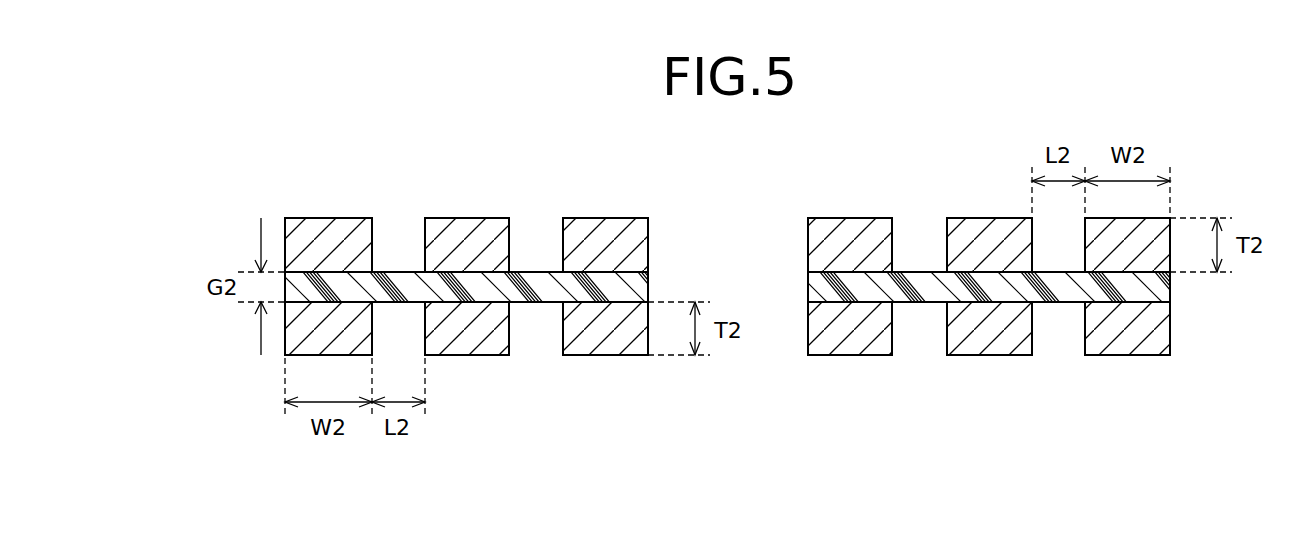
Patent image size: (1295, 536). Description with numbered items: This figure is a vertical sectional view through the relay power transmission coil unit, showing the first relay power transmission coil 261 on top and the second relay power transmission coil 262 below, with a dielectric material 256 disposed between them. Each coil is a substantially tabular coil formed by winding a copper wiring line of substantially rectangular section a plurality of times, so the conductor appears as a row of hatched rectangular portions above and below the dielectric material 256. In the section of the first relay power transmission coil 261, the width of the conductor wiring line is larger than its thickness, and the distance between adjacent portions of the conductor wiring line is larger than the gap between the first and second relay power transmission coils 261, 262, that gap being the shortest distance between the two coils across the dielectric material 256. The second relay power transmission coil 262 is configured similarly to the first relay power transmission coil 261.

The dielectric material 256 is at (648, 286).
The first relay power transmission coil 261 is at (605, 218).
The second relay power transmission coil 262 is at (467, 355).